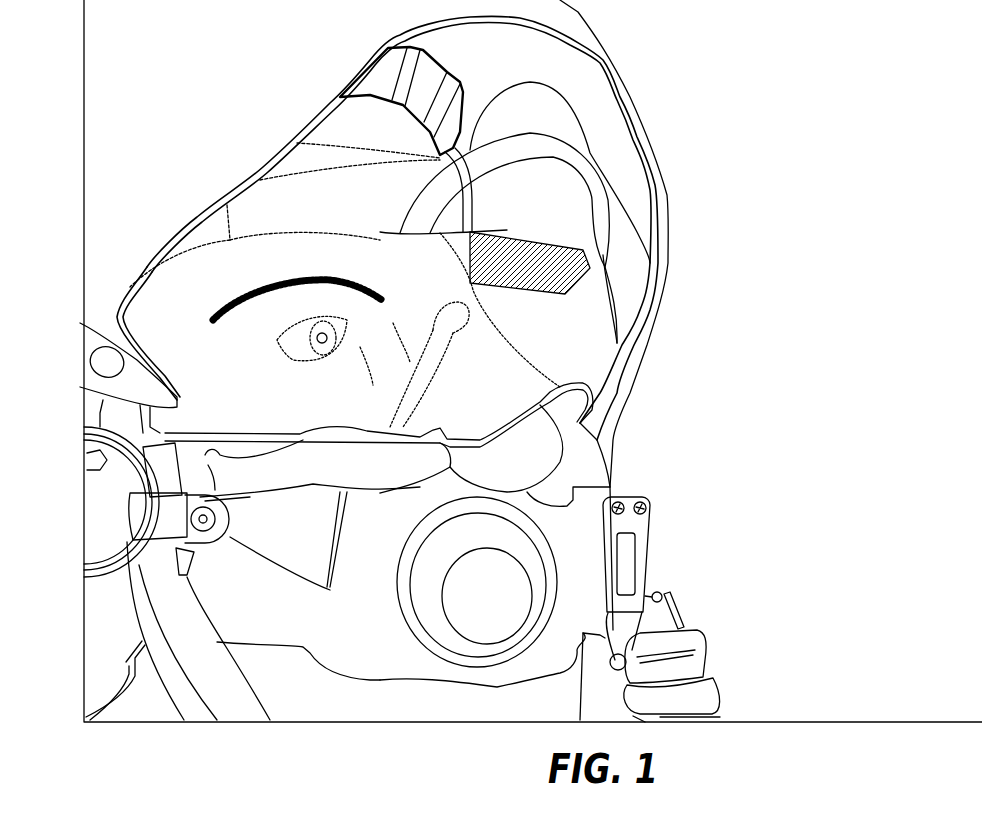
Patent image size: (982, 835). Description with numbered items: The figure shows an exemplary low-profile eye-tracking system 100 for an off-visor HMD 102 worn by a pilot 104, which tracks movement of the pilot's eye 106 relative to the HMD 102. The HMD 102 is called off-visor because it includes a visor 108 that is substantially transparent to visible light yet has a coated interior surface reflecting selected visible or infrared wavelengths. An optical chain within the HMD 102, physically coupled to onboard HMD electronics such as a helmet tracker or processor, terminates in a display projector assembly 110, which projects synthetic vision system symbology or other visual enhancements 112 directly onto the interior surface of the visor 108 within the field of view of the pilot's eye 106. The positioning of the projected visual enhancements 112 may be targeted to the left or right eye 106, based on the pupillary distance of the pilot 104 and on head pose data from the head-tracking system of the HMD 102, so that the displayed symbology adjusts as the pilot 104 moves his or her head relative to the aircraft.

The low-profile eye-tracking system 100 is at (176, 75).
The off-visor HMD 102 is at (630, 103).
The pilot 104 is at (343, 244).
The pilot's eye 106 is at (280, 343).
The visor 108 is at (560, 365).
The display projector assembly 110 is at (357, 125).
The visual enhancements 112 is at (560, 262).